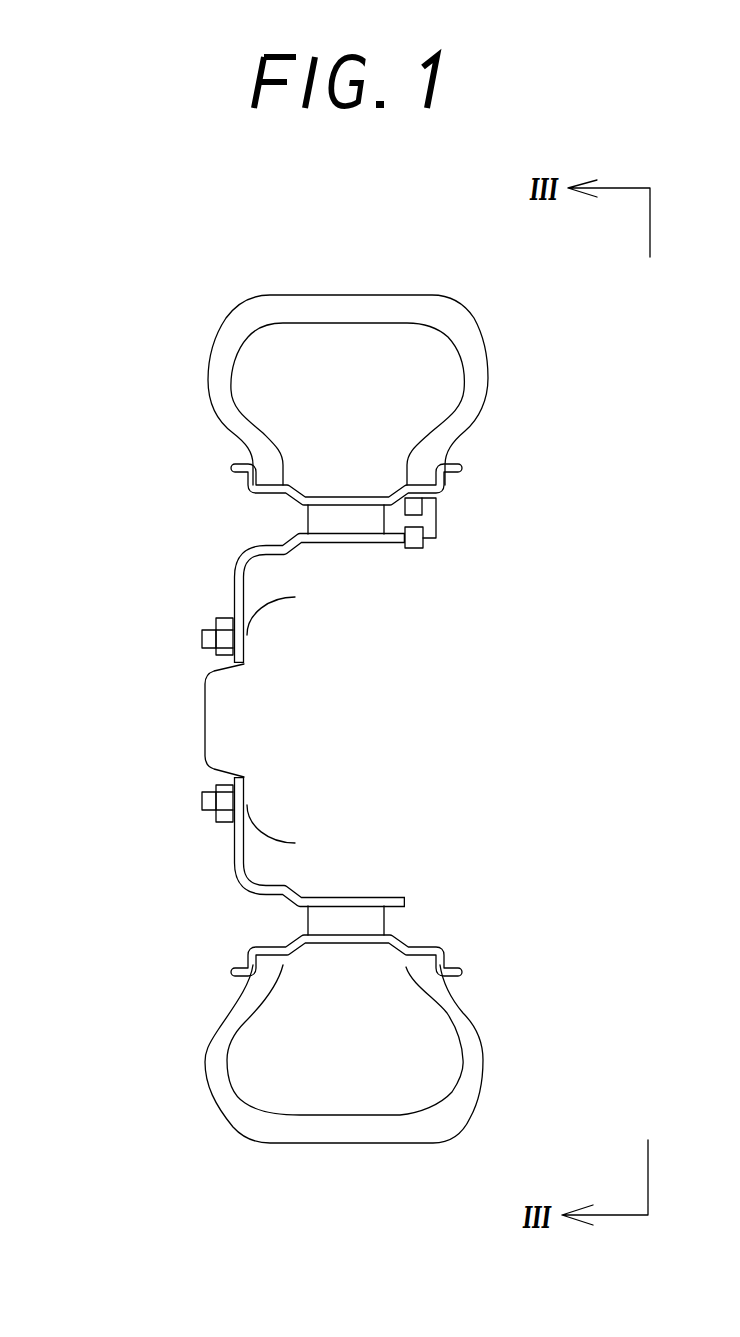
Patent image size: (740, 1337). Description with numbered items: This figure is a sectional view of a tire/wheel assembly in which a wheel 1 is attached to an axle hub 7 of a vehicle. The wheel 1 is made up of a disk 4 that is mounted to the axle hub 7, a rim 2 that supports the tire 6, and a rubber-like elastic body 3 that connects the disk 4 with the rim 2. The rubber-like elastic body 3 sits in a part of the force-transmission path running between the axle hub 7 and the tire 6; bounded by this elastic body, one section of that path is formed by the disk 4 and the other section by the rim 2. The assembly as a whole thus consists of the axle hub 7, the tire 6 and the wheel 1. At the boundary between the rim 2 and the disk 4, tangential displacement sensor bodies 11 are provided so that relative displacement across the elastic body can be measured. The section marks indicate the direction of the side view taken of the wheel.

The wheel 1 is at (147, 448).
The rim 2 is at (237, 474).
The rubber-like elastic body 3 is at (322, 518).
The disk 4 is at (232, 556).
The tire 6 is at (423, 313).
The axle hub 7 is at (205, 708).
The tangential displacement sensor bodies 11 is at (438, 497).